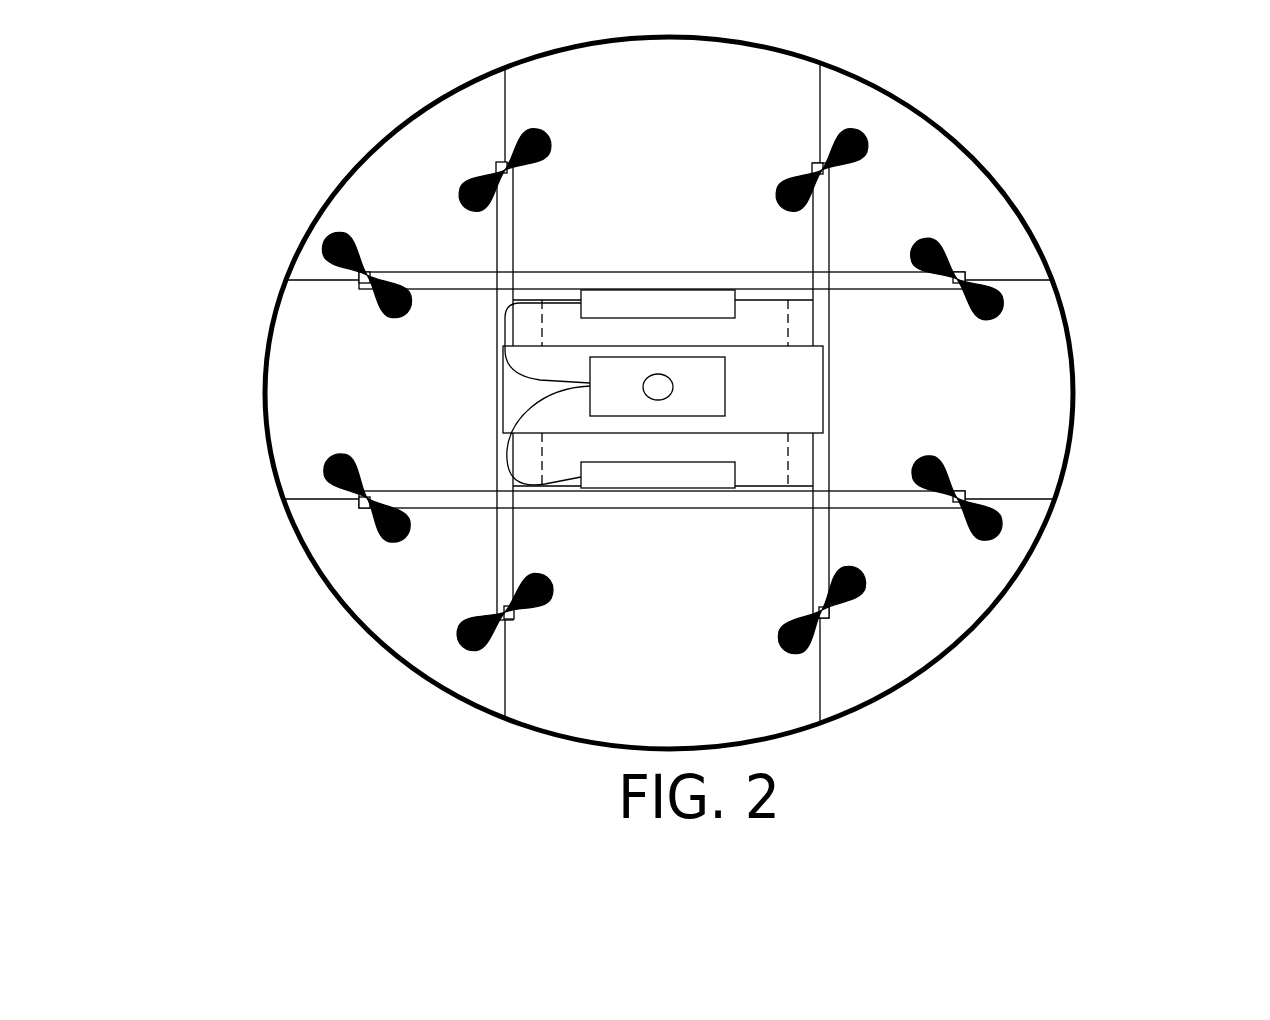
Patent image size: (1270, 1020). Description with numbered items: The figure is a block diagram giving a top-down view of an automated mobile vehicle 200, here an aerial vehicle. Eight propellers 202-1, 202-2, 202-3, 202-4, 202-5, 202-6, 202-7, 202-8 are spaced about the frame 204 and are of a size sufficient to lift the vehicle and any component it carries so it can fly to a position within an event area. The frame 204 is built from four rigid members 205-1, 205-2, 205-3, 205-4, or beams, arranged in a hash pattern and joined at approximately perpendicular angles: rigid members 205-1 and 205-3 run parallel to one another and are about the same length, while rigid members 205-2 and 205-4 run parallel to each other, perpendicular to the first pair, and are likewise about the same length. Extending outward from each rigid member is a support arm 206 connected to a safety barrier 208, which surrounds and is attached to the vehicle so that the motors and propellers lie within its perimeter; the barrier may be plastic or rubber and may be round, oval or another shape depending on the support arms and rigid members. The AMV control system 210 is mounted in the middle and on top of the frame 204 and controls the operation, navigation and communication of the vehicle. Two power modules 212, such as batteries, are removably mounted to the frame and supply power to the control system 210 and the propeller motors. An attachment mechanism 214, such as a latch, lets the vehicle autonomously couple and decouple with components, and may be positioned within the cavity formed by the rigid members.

The automated mobile vehicle 200 is at (1145, 125).
The propeller 202-1 is at (545, 138).
The propeller 202-2 is at (858, 152).
The propeller 202-3 is at (993, 318).
The propeller 202-4 is at (942, 462).
The propeller 202-5 is at (860, 573).
The propeller 202-6 is at (552, 576).
The propeller 202-7 is at (357, 462).
The propeller 202-8 is at (358, 245).
The frame 204 is at (662, 391).
The rigid member 205-1 is at (875, 271).
The rigid member 205-2 is at (830, 227).
The rigid member 205-3 is at (865, 491).
The rigid member 205-4 is at (515, 228).
The support arm 206 is at (505, 96).
The safety barrier 208 is at (940, 132).
The AMV control system 210 is at (807, 388).
The power module 212 is at (676, 313).
The attachment mechanism 214 is at (752, 318).